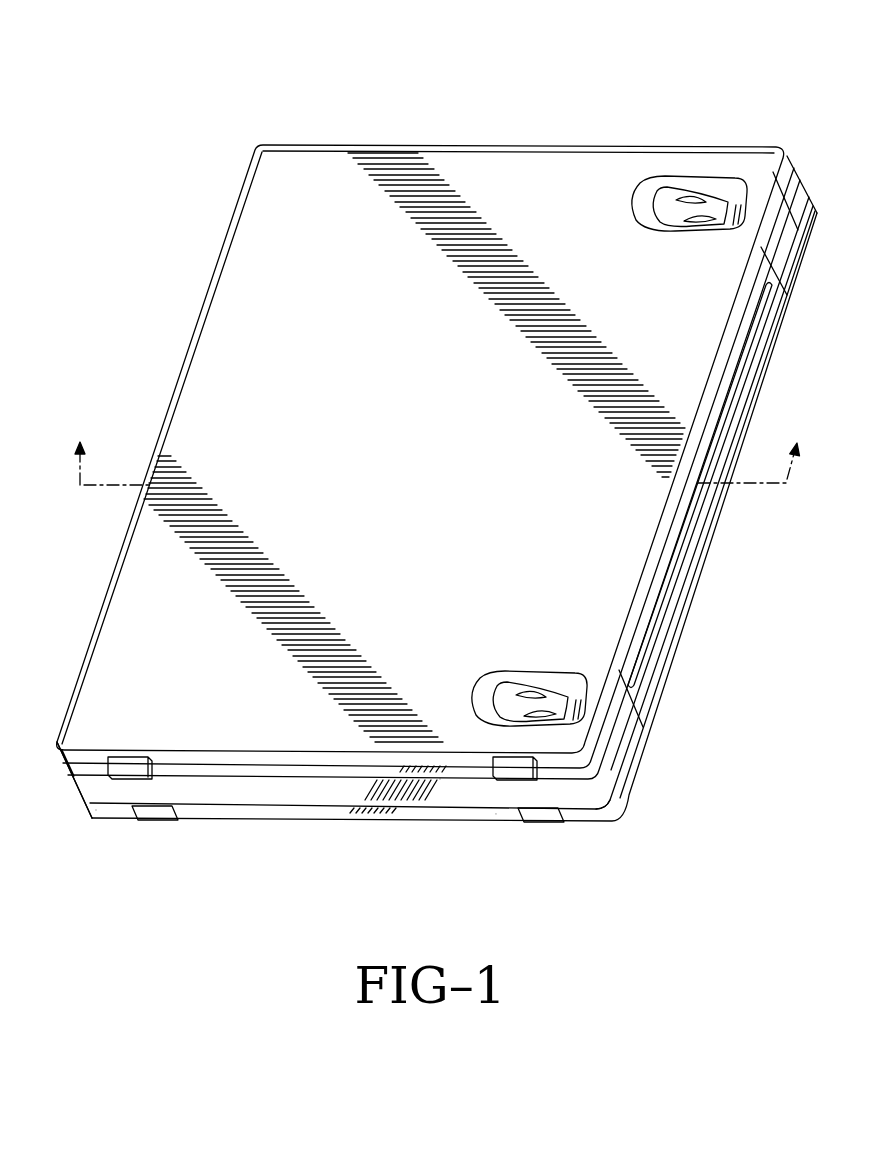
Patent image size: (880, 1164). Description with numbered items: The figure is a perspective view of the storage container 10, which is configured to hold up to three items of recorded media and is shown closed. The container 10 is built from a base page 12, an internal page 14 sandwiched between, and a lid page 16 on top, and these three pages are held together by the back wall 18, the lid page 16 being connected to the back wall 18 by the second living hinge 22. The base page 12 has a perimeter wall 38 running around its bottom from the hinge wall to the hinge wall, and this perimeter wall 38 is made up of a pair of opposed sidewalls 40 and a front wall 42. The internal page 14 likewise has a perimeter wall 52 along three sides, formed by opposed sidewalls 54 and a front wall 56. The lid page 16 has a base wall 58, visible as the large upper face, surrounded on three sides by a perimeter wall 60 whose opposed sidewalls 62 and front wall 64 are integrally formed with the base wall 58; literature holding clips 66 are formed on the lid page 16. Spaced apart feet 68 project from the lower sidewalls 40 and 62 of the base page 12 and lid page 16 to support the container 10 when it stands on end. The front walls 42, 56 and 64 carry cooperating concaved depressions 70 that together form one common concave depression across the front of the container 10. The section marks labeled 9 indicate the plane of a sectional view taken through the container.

The storage container 10 is at (655, 70).
The base page 12 is at (392, 825).
The internal page 14 is at (343, 812).
The lid page 16 is at (440, 148).
The back wall 18 is at (66, 803).
The second living hinge 22 is at (70, 705).
The perimeter wall 38 is at (210, 820).
The sidewalls 40 is at (297, 812).
The front wall 42 is at (633, 770).
The perimeter wall 52 is at (441, 802).
The sidewalls 54 is at (250, 793).
The front wall 56 is at (620, 752).
The base wall 58 is at (478, 168).
The perimeter wall 60 is at (783, 205).
The sidewalls 62 is at (290, 770).
The front wall 64 is at (782, 183).
The literature holding clips 66 is at (688, 210).
The feet 68 is at (130, 772).
The concaved depressions 70 is at (688, 562).
The section line 9- 9 is at (441, 448).